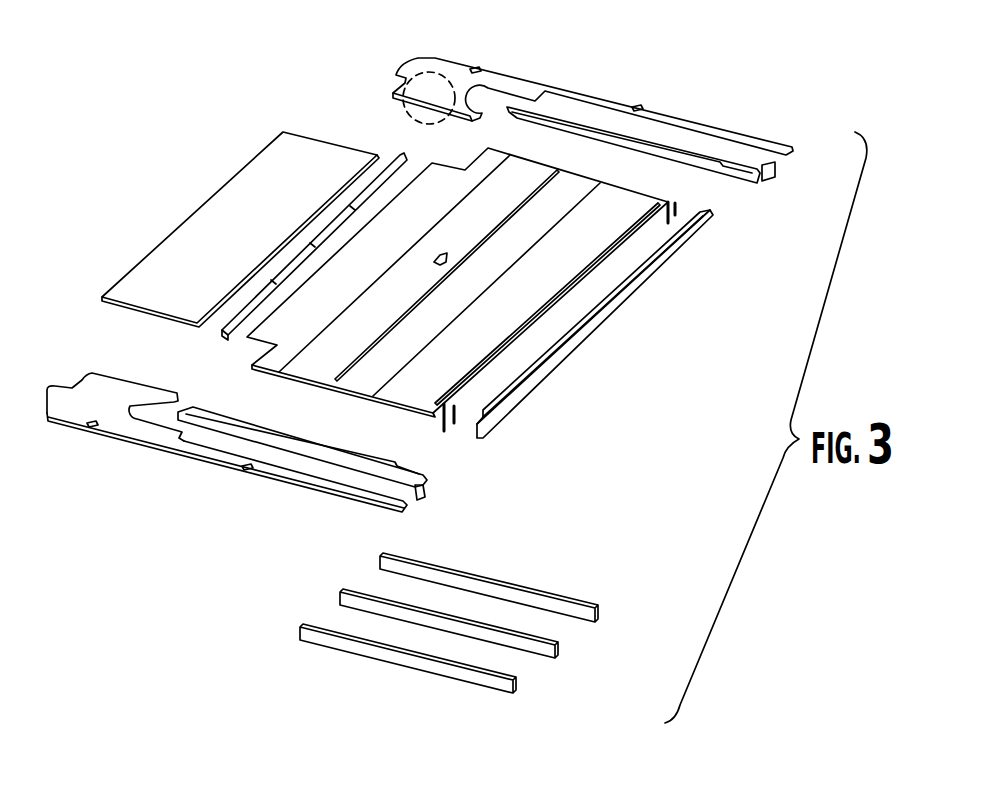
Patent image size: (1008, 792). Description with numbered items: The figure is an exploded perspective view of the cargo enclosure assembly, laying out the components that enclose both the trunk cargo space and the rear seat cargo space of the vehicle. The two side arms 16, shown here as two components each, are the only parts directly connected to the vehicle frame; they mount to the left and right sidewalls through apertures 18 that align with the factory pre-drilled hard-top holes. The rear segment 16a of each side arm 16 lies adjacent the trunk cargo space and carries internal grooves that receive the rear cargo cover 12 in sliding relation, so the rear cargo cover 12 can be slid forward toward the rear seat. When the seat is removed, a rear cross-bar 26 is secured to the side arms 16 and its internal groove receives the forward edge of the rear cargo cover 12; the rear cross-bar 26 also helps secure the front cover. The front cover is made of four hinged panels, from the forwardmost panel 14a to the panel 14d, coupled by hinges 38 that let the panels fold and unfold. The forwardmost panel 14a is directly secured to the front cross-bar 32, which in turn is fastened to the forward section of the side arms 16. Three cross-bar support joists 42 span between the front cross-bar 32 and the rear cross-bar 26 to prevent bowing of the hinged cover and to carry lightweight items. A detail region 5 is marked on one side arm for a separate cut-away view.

The detail region of clamp bracket 5 is at (432, 73).
The rear cargo cover 12 is at (235, 165).
The forwardmost panel 14a is at (523, 300).
The hinged panel 14d is at (385, 233).
The side arm 16 is at (78, 388).
The rear segment 16a is at (96, 400).
The aperture 18 is at (475, 68).
The rear cross-bar 26 is at (242, 295).
The front cross-bar 32 is at (548, 377).
The hinge 38 is at (588, 210).
The cross-bar support joist 42 is at (557, 653).